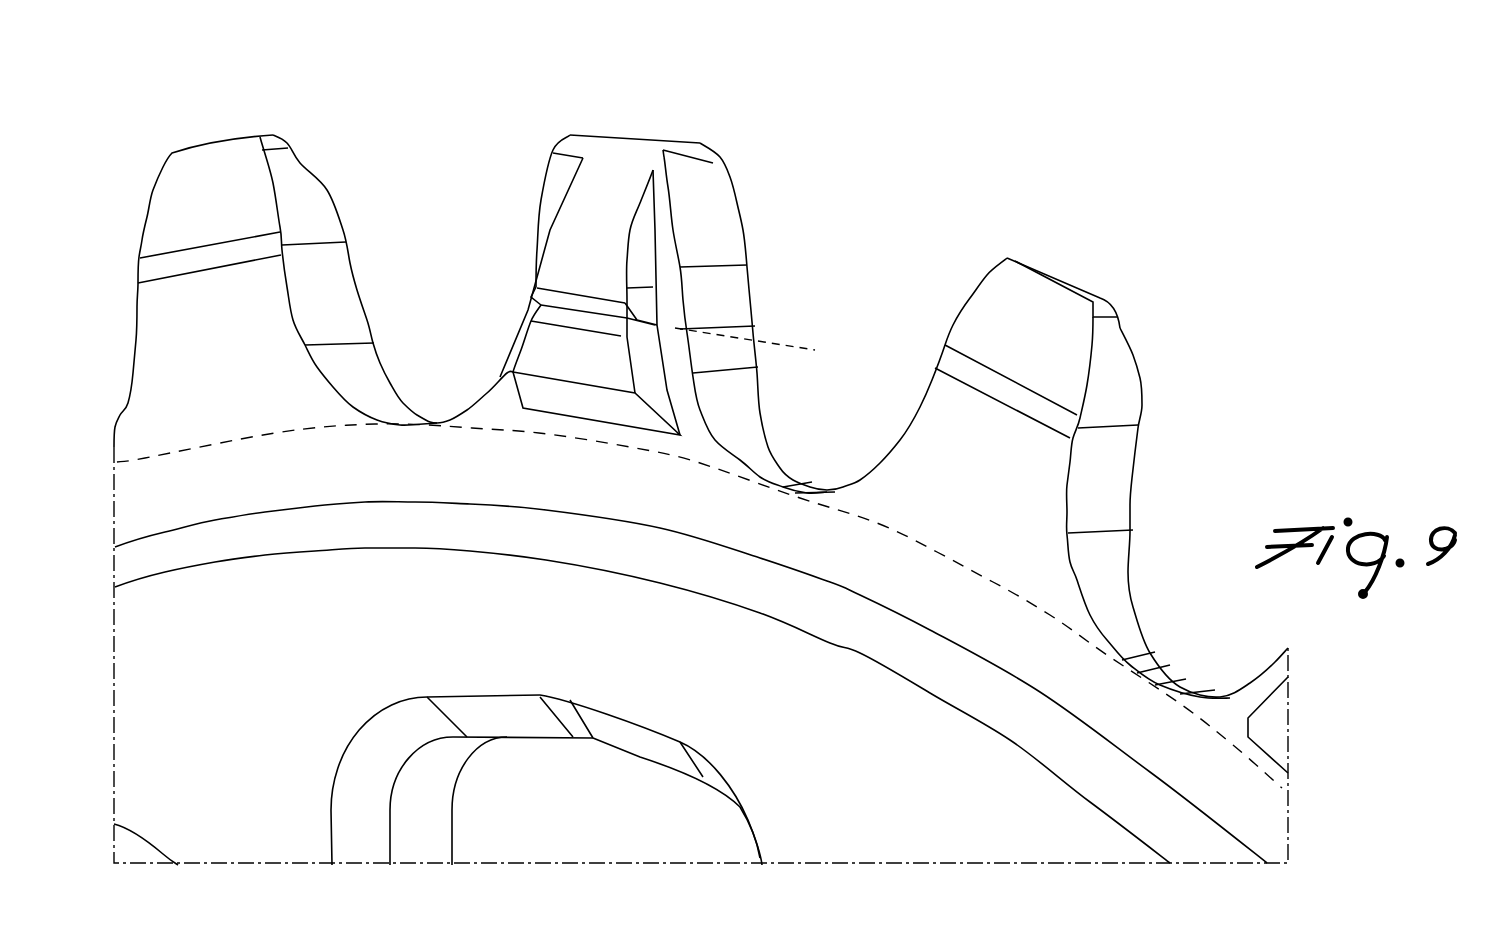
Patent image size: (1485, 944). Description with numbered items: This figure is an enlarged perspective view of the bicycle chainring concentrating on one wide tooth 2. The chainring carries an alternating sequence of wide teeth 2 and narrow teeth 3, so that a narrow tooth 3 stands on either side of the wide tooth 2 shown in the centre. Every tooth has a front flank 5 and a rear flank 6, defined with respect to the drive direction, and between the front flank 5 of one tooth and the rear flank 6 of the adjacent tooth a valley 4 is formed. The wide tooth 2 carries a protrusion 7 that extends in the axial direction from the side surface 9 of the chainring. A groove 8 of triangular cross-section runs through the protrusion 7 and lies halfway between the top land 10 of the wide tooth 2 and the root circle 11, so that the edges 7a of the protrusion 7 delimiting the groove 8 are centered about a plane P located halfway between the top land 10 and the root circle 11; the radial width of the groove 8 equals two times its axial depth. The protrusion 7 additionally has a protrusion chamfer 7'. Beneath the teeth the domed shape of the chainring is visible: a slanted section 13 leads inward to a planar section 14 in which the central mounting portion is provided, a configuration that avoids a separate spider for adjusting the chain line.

The wide tooth 2 is at (665, 112).
The narrow tooth 3 is at (292, 118).
The valley 4 is at (861, 356).
The front flank 5 is at (717, 243).
The rear flank 6 is at (542, 205).
The protrusion 7 is at (681, 263).
The edges of the protrusion 7a is at (450, 340).
The protrusion chamfer 7' is at (596, 437).
The groove 8 is at (532, 296).
The side surface 9 is at (667, 303).
The top land 10 is at (633, 133).
The root circle 11 is at (937, 550).
The slanted section 13 is at (1040, 720).
The planar section 14 is at (893, 787).
The plane P is at (812, 350).